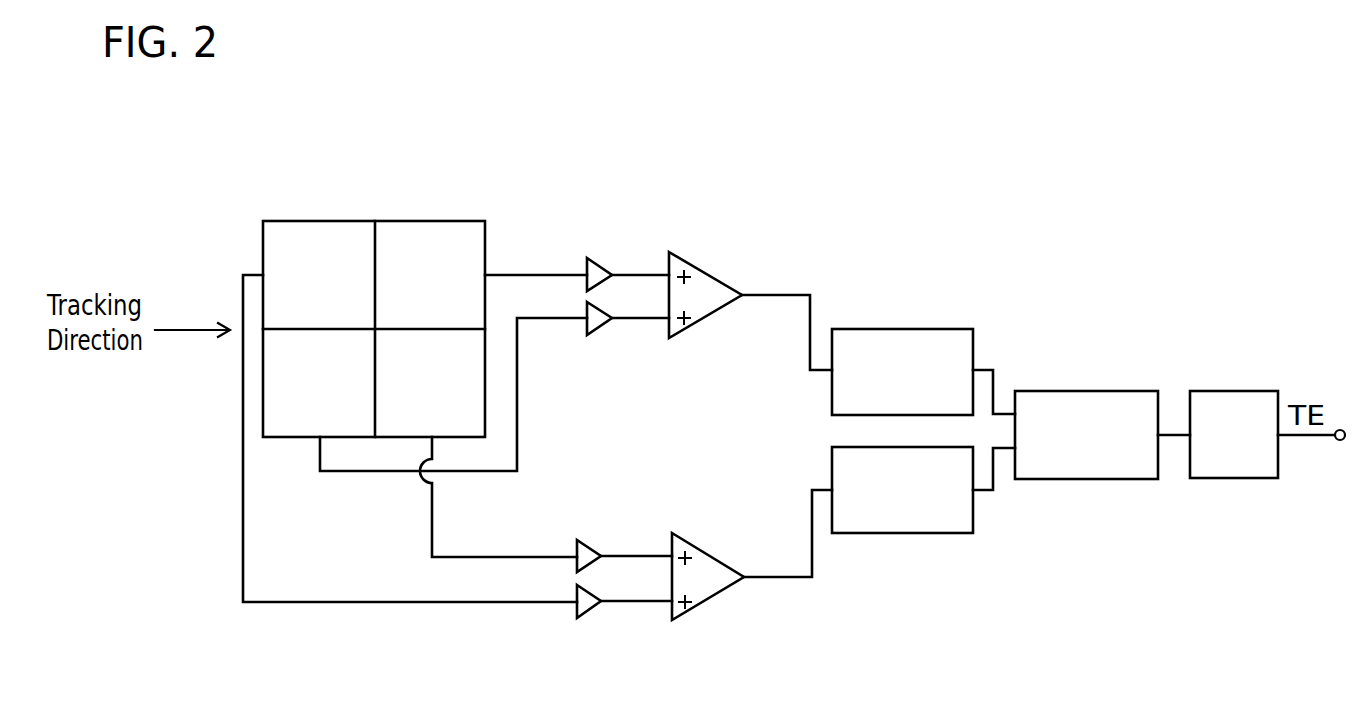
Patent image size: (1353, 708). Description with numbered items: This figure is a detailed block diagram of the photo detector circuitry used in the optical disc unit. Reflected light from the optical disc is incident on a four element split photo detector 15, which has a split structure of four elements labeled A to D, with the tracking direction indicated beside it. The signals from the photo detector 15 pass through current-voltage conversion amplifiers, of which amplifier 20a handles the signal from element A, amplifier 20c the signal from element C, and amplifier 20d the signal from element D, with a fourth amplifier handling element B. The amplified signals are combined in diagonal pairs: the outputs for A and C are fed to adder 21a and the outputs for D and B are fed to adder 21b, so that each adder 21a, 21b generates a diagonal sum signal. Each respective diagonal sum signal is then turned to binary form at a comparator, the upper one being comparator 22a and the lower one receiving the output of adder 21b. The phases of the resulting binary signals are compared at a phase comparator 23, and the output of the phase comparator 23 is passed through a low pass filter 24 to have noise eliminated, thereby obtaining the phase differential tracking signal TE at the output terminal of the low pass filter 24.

The four element split photo detector 15 is at (408, 220).
The current-voltage conversion amplifier 20a is at (596, 259).
The current-voltage conversion amplifier 20c is at (598, 328).
The current-voltage conversion amplifier 20d is at (588, 545).
The adder 21a is at (703, 271).
The adder 21b is at (707, 550).
The comparator 22a is at (925, 326).
The phase comparator 23 is at (1077, 388).
The low pass filter 24 is at (1237, 388).